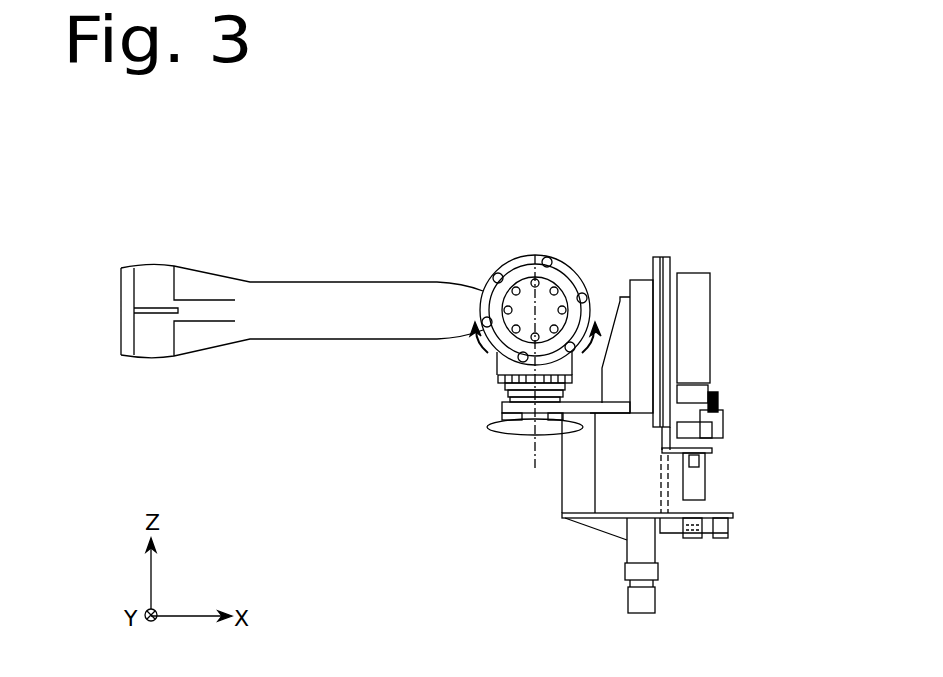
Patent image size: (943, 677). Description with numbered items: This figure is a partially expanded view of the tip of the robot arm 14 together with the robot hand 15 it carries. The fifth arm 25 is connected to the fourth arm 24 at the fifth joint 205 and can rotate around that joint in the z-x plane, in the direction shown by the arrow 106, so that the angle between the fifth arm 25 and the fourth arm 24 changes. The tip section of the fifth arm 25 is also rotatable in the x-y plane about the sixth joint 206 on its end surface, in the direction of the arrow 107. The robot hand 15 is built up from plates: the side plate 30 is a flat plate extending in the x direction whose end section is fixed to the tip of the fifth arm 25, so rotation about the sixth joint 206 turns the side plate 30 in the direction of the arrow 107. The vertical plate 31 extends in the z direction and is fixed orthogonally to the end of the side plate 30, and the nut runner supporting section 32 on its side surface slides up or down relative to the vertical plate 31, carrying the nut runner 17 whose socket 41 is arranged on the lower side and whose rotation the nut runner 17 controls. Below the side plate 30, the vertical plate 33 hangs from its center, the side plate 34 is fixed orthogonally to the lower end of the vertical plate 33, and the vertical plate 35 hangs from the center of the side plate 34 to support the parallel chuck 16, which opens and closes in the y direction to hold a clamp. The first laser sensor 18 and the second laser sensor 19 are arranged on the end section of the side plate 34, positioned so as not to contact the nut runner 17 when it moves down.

The robot arm 14 is at (458, 204).
The fourth arm 24 is at (322, 292).
The fifth joint 205 is at (535, 308).
The arrow 106 is at (476, 343).
The fifth arm 25 is at (500, 366).
The robot hand 15 is at (488, 541).
The side plate 30 is at (512, 408).
The arrow 107 is at (492, 432).
The sixth joint 206 is at (531, 448).
The vertical plate 33 is at (576, 492).
The side plate 34 is at (567, 520).
The vertical plate 35 is at (637, 555).
The parallel chuck 16 is at (637, 605).
The vertical plate 31 is at (636, 292).
The nut runner supporting section 32 is at (661, 257).
The nut runner 17 is at (697, 312).
The socket 41 is at (693, 480).
The first laser sensor 18 is at (695, 538).
The second laser sensor 19 is at (728, 532).